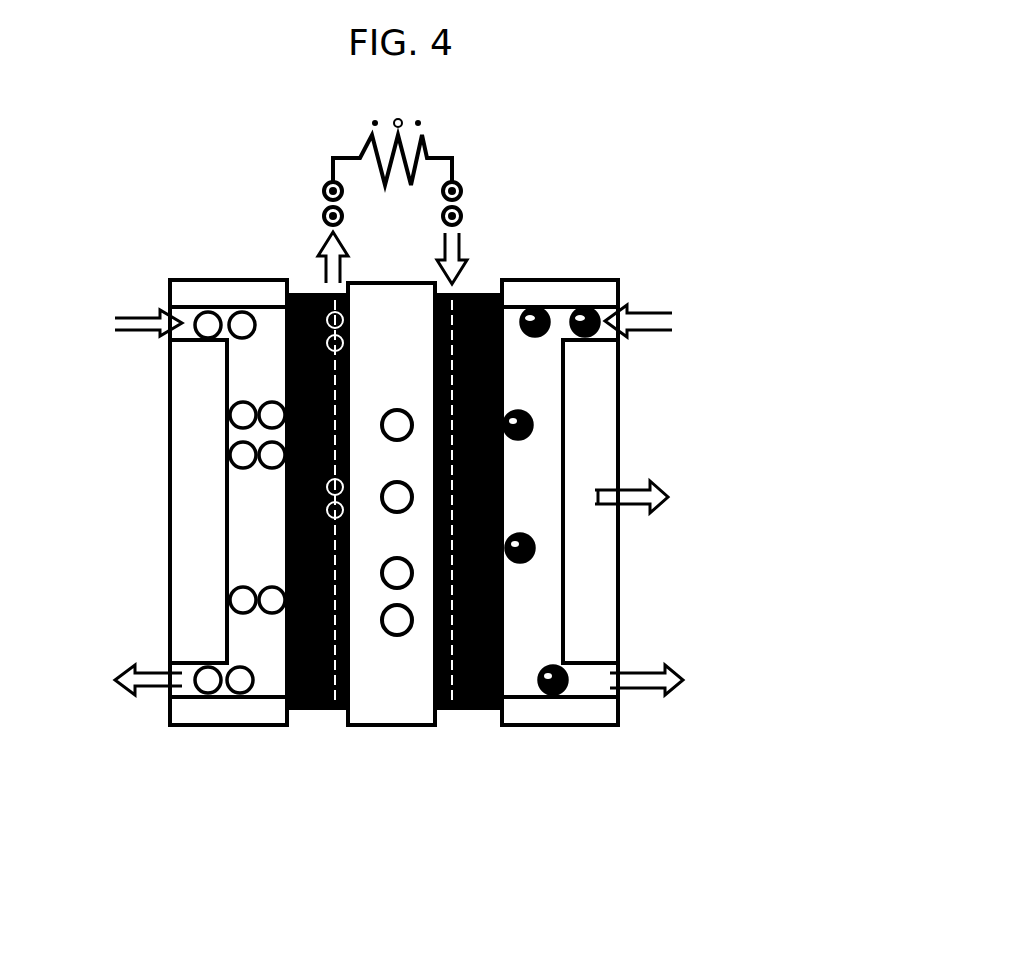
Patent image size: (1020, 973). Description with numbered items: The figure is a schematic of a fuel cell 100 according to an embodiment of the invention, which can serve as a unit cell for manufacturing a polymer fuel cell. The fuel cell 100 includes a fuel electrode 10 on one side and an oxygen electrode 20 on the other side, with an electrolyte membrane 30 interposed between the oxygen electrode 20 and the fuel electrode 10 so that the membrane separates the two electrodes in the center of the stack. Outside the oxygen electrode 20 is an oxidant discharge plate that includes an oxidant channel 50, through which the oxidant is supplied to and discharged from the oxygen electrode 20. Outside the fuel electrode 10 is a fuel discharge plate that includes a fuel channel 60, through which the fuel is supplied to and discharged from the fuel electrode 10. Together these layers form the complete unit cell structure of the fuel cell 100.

The fuel cell 100 is at (140, 229).
The fuel electrode 10 is at (322, 727).
The oxygen electrode 20 is at (467, 739).
The proton exchange membrane 30 is at (400, 735).
The oxidant channel 50 is at (520, 605).
The fuel channel 60 is at (248, 641).